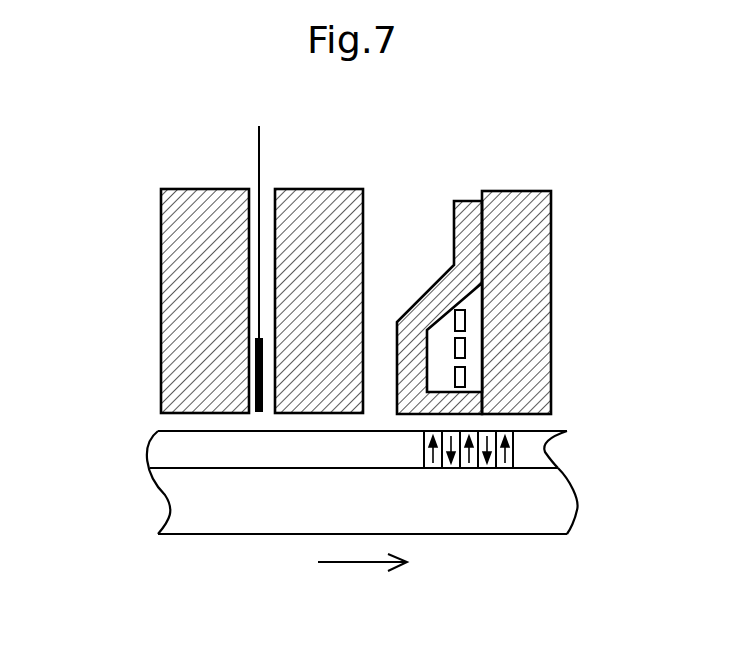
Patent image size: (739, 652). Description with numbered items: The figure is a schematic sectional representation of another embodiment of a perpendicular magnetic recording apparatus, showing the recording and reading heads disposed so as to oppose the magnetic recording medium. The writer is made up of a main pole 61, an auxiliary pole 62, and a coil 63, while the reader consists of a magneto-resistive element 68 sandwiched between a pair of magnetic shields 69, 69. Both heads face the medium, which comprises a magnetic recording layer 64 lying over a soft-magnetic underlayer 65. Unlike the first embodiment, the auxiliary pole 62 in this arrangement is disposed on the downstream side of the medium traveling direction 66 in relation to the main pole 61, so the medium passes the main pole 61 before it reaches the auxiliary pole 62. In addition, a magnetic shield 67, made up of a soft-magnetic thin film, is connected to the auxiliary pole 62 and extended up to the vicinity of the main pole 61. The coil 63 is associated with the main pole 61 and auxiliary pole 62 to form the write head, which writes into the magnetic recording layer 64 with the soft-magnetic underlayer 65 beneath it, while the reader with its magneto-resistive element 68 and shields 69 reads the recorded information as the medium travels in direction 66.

The main pole 61 is at (472, 203).
The auxiliary pole 62 is at (551, 266).
The coil 63 is at (452, 312).
The magnetic recording layer 64 is at (185, 443).
The soft-magnetic underlayer 65 is at (195, 507).
The medium traveling direction 66 is at (363, 563).
The magnetic shield 67 is at (510, 413).
The magneto-resistive element 68 is at (266, 253).
The magnetic shields 69 is at (200, 195).